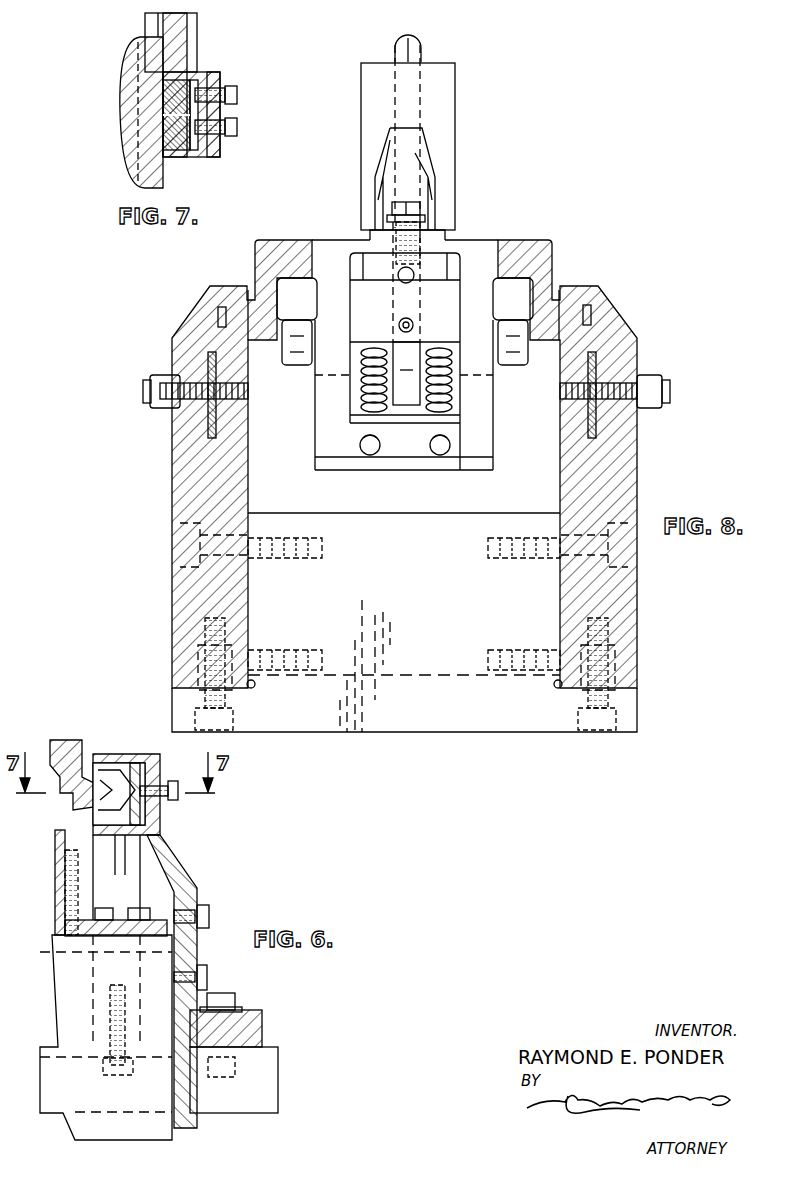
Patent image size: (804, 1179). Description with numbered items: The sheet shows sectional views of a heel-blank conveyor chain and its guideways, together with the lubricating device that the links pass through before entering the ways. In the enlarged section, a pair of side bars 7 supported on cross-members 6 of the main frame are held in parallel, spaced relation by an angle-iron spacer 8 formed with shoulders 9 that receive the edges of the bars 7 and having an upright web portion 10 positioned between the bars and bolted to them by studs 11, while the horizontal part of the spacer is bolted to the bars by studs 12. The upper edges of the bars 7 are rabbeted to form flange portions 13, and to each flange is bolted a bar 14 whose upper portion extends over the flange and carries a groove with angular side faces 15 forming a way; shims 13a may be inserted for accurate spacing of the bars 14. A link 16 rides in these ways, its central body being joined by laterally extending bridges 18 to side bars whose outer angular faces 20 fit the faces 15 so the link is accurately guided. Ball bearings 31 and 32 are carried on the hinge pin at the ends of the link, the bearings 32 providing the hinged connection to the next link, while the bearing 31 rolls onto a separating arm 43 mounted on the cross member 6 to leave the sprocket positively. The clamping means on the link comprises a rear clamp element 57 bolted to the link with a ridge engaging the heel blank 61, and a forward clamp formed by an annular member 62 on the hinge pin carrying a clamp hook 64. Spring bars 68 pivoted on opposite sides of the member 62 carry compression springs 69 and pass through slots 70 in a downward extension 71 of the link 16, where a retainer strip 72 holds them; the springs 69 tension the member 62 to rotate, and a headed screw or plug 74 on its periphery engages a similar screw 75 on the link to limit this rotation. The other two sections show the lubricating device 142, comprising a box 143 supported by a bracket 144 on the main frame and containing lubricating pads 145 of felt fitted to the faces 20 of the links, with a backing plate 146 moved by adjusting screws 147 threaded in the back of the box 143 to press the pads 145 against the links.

In FIG. 6, the cross-member 6 is at (272, 1050).
In FIG. 8, the side bar 7 is at (180, 594).
In FIG. 6, the side bar 7 is at (140, 890).
In FIG. 8, the angle-iron spacer 8 is at (380, 733).
In FIG. 8, the shoulder 9 is at (252, 690).
In FIG. 8, the upright web portion 10 is at (462, 521).
In FIG. 8, the stud 11 is at (283, 650).
In FIG. 8, the stud 12 is at (200, 700).
In FIG. 8, the flange portion 13 is at (244, 422).
In FIG. 8, the shim 13a is at (204, 420).
In FIG. 7, the bar 14 is at (187, 48).
In FIG. 8, the bar 14 is at (172, 342).
In FIG. 6, the bar 14 is at (140, 858).
In FIG. 8, the angular side face 15 is at (224, 310).
In FIG. 7, the link 16 is at (128, 172).
In FIG. 8, the link 16 is at (505, 244).
In FIG. 6, the link 16 is at (72, 745).
In FIG. 8, the bridge 18 is at (297, 312).
In FIG. 8, the angular face 20 is at (588, 315).
In FIG. 8, the ball bearing 31 is at (292, 358).
In FIG. 8, the ball bearing 32 is at (312, 362).
In FIG. 6, the separating arm 43 is at (57, 845).
In FIG. 8, the rear clamp element 57 is at (428, 158).
In FIG. 8, the heel blank 61 is at (445, 95).
In FIG. 8, the annular member 62 is at (416, 346).
In FIG. 8, the clamp hook 64 is at (419, 50).
In FIG. 8, the spring bar 68 is at (368, 456).
In FIG. 8, the compression spring 69 is at (366, 393).
In FIG. 8, the slot 70 is at (381, 440).
In FIG. 8, the downward extension 71 is at (462, 433).
In FIG. 8, the retainer strip 72 is at (397, 471).
In FIG. 8, the headed screw or plug 74 is at (414, 281).
In FIG. 8, the screw 75 is at (399, 321).
In FIG. 6, the lubricating device 142 is at (170, 815).
In FIG. 7, the box 143 is at (199, 80).
In FIG. 6, the box 143 is at (118, 778).
In FIG. 7, the bracket 144 is at (219, 87).
In FIG. 6, the bracket 144 is at (196, 886).
In FIG. 7, the lubricating pad 145 is at (178, 92).
In FIG. 6, the lubricating pad 145 is at (110, 770).
In FIG. 6, the backing plate 146 is at (165, 826).
In FIG. 7, the adjusting screw 147 is at (238, 102).
In FIG. 6, the adjusting screw 147 is at (182, 791).